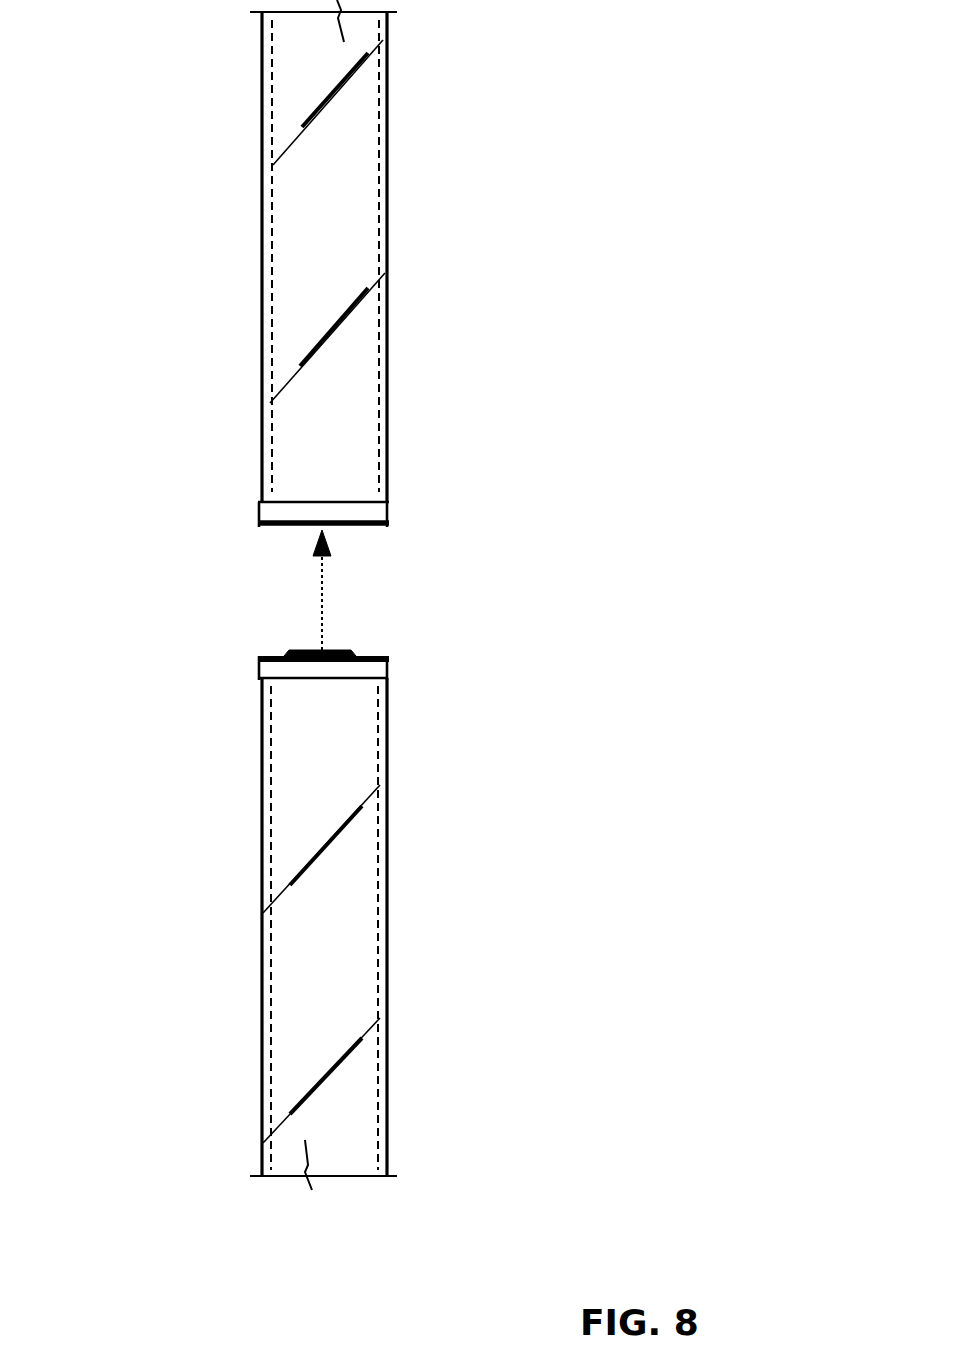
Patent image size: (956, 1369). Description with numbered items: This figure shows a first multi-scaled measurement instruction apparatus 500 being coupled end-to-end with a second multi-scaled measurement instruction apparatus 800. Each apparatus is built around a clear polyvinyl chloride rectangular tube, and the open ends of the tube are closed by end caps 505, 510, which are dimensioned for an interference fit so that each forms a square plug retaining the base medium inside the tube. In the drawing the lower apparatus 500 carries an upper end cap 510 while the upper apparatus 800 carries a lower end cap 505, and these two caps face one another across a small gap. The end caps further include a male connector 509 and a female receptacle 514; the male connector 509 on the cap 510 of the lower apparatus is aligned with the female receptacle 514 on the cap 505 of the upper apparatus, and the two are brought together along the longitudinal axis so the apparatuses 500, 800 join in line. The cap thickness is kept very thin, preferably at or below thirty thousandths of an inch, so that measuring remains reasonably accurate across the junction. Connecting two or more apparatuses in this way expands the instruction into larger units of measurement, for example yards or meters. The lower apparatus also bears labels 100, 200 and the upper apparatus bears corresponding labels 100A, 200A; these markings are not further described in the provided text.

The measurement instruction apparatus 800 is at (351, 294).
The upper outer tube 100A is at (442, 251).
The upper inner tube 200A is at (388, 226).
The end cap 505 is at (377, 528).
The female receptacle 514 is at (318, 545).
The male connector 509 is at (293, 650).
The end cap 510 is at (388, 692).
The lower outer tube 100 is at (427, 934).
The lower inner tube 200 is at (388, 913).
The rectangular tube 500 is at (336, 907).